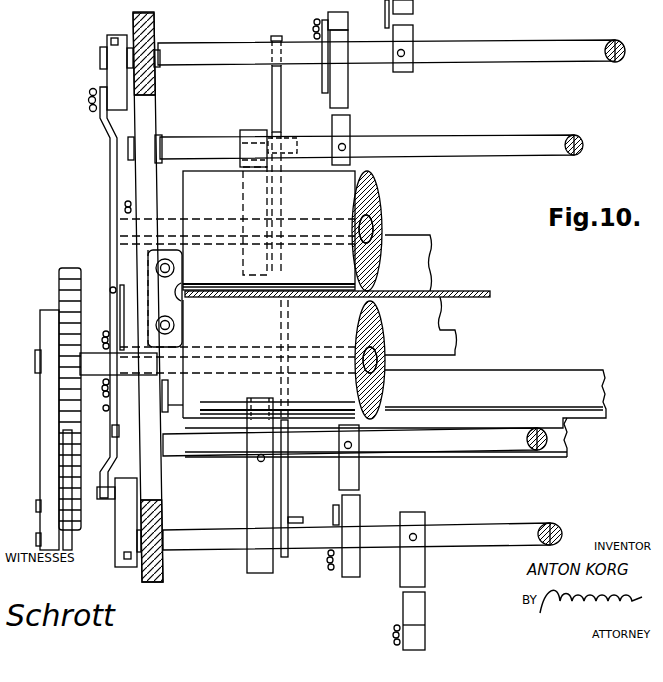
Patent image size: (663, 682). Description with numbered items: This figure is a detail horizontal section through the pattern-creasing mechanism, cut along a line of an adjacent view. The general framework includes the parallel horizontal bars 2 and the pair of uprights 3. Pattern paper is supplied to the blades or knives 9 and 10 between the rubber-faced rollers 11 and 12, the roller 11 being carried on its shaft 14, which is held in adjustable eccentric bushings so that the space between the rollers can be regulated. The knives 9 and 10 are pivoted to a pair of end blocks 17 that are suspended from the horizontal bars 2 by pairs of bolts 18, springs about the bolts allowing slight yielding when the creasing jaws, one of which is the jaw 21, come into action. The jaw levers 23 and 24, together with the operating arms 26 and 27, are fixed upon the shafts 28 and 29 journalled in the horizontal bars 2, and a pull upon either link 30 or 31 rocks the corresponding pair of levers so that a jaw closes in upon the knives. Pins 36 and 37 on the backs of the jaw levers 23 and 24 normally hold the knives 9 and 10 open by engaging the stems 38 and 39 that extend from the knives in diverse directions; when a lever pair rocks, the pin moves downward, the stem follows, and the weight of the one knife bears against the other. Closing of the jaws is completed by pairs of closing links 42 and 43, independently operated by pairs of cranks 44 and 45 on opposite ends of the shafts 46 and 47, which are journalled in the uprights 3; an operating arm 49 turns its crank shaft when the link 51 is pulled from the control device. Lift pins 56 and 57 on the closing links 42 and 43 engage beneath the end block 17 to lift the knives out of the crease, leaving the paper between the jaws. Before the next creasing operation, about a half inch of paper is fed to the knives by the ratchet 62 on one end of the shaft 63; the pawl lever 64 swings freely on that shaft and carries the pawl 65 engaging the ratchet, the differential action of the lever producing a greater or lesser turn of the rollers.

The horizontal bars 2 is at (138, 177).
The uprights 3 is at (156, 86).
The knife 9 is at (414, 242).
The knife 10 is at (452, 332).
The rubber-faced roller 11 is at (380, 182).
The rubber-faced roller 12 is at (342, 334).
The shaft 14 is at (176, 224).
The end blocks 17 is at (146, 280).
The bolts 18 is at (180, 300).
The creasing jaw 21 is at (474, 376).
The jaw lever 23 is at (246, 128).
The jaw lever 24 is at (248, 482).
The operating arm 26 is at (347, 90).
The operating arm 27 is at (353, 518).
The shaft 28 is at (374, 136).
The shaft 29 is at (442, 452).
The link 30 is at (322, 86).
The link 31 is at (334, 510).
The pin 36 is at (283, 142).
The pin 37 is at (298, 524).
The stem 38 is at (272, 84).
The stem 39 is at (290, 470).
The closing link 42 is at (112, 155).
The closing link 43 is at (115, 432).
The crank 44 is at (110, 73).
The crank 45 is at (122, 548).
The crank shaft 46 is at (235, 47).
The crank shaft 47 is at (230, 552).
The operating arm 49 is at (428, 576).
The link 51 is at (402, 602).
The lift pin 56 is at (128, 300).
The lift pin 57 is at (168, 404).
The ratchet 62 is at (68, 416).
The shaft 63 is at (118, 364).
The pawl lever 64 is at (43, 470).
The pawl 65 is at (68, 482).